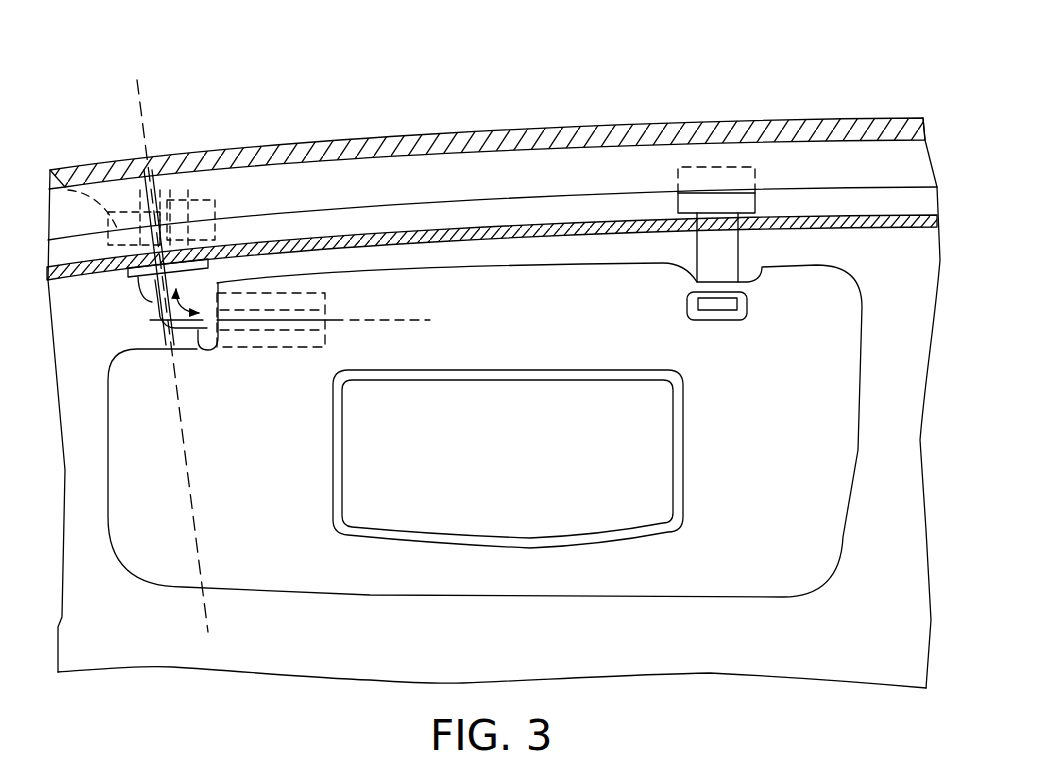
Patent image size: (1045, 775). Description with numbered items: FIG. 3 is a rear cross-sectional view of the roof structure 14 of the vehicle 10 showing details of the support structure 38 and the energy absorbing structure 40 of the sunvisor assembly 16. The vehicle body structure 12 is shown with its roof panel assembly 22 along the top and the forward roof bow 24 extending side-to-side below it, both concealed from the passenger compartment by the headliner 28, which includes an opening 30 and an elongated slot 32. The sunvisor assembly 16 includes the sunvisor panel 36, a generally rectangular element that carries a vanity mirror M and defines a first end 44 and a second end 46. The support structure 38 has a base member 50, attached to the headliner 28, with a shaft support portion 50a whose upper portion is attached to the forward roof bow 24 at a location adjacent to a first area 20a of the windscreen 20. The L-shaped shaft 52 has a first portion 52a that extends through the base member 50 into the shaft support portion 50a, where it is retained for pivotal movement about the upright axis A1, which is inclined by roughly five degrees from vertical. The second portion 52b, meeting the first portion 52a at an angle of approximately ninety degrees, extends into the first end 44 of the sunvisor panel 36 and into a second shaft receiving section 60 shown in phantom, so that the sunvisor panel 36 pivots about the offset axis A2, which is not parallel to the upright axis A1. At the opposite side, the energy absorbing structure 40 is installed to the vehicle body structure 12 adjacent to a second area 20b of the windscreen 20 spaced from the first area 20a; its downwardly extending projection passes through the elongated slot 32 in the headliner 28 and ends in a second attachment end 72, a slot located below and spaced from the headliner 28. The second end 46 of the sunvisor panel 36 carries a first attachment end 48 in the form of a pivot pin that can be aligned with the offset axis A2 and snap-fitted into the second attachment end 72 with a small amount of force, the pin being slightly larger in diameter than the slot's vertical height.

The vehicle 10 is at (739, 72).
The vehicle body structure 12 is at (487, 127).
The roof structure 14 is at (487, 129).
The sunvisor assembly 16 is at (383, 597).
The windscreen 20 is at (494, 415).
The first area of the windscreen 20a is at (293, 267).
The second area of the windscreen 20b is at (683, 247).
The roof panel assembly 22 is at (360, 130).
The forward roof bow 24 is at (577, 170).
The headliner 28 is at (897, 227).
The opening 30 is at (155, 282).
The elongated slot 32 is at (763, 230).
The sunvisor panel 36 is at (496, 463).
The support structure 38 is at (187, 196).
The energy absorbing structure 40 is at (757, 168).
The first end of the sunvisor panel 44 is at (203, 347).
The second end of the sunvisor panel 46 is at (753, 270).
The first attachment end 48 is at (728, 249).
The base member 50 is at (128, 222).
The shaft support portion 50a is at (60, 180).
The L-shaped shaft 52 is at (176, 266).
The first portion of the L-shaped shaft 52a is at (117, 163).
The second portion of the L-shaped shaft 52b is at (188, 332).
The second shaft receiving section 60 is at (283, 348).
The second attachment end 72 is at (727, 288).
The vanity mirror M is at (622, 430).
The upright axis A1 is at (142, 103).
The offset axis A2 is at (403, 320).